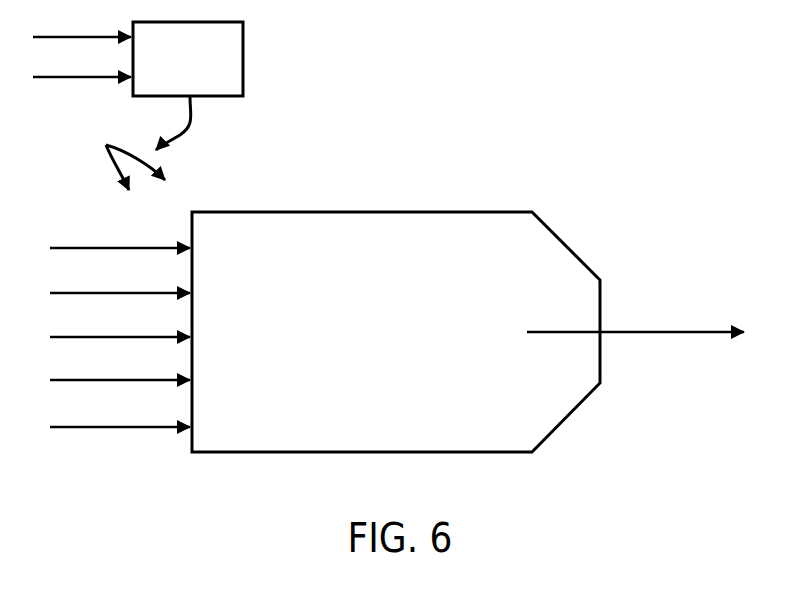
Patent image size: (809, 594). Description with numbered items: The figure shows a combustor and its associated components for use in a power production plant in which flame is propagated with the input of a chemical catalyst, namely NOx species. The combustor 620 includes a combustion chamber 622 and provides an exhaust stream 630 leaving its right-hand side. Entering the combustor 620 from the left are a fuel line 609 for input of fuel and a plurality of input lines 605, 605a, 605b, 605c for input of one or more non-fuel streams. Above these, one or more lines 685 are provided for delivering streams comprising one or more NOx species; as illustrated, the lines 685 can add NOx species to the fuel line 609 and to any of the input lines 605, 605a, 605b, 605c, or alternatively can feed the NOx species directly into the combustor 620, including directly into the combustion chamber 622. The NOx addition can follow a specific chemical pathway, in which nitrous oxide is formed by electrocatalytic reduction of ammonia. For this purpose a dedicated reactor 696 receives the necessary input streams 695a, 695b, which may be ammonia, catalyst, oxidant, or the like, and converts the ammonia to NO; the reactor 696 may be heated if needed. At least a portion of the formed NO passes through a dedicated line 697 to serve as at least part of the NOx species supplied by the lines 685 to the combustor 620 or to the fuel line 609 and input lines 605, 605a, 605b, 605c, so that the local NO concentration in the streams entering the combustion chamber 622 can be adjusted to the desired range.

The reactor 696 is at (188, 59).
The input stream 695a is at (82, 25).
The input stream 695b is at (82, 65).
The dedicated line 697 is at (193, 123).
The lines 685 is at (126, 156).
The combustor 620 is at (462, 212).
The combustion chamber 622 is at (410, 253).
The fuel line 609 is at (120, 234).
The input line 605 is at (120, 279).
The input line 605a is at (120, 323).
The input line 605b is at (120, 367).
The input line 605c is at (120, 414).
The exhaust stream 630 is at (635, 319).